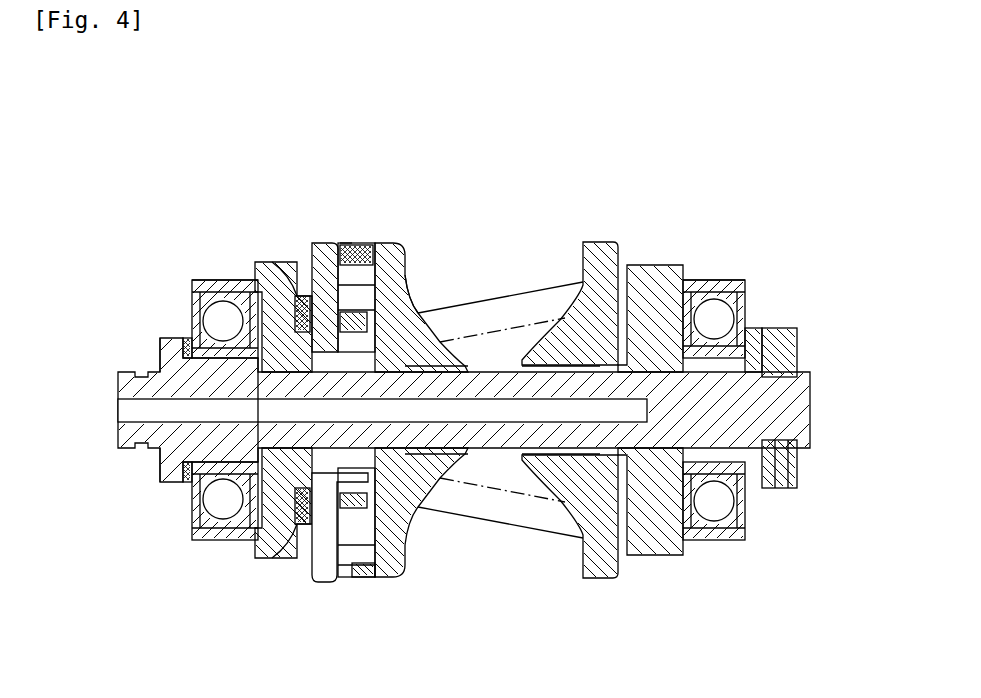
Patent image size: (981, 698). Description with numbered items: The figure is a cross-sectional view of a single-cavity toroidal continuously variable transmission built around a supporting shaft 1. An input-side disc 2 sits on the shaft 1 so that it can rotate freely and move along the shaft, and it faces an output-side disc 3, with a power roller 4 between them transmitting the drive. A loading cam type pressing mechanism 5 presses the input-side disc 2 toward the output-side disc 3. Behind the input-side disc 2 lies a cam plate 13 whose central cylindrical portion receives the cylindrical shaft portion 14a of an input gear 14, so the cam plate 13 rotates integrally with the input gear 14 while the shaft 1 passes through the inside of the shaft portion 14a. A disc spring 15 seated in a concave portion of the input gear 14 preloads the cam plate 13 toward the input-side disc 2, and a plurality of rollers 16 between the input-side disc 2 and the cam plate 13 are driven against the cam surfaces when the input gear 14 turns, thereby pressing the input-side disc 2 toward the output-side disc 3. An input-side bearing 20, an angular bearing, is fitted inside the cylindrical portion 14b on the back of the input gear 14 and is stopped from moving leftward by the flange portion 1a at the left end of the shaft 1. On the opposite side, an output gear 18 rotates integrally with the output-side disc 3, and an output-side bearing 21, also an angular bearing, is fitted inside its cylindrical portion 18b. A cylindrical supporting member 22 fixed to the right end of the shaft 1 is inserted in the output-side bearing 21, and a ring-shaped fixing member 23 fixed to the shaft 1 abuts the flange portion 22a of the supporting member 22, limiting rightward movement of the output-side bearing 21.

The shaft 1 is at (778, 395).
The flange portion 1a is at (165, 345).
The input-side disc 2 is at (393, 243).
The output-side disc 3 is at (600, 242).
The power roller 4 is at (542, 272).
The pressing mechanism 5 is at (350, 238).
The cam plate 13 is at (328, 243).
The input gear 14 is at (282, 262).
The shaft portion 14a is at (360, 352).
The cylindrical portion 14b is at (210, 280).
The disc spring 15 is at (268, 290).
The rollers 16 is at (366, 285).
The output gear 18 is at (655, 265).
The cylindrical portion 18b is at (708, 278).
The input-side bearing 20 is at (205, 300).
The output-side bearing 21 is at (742, 298).
The supporting member 22 is at (735, 450).
The flange portion 22a is at (752, 340).
The fixing member 23 is at (790, 345).